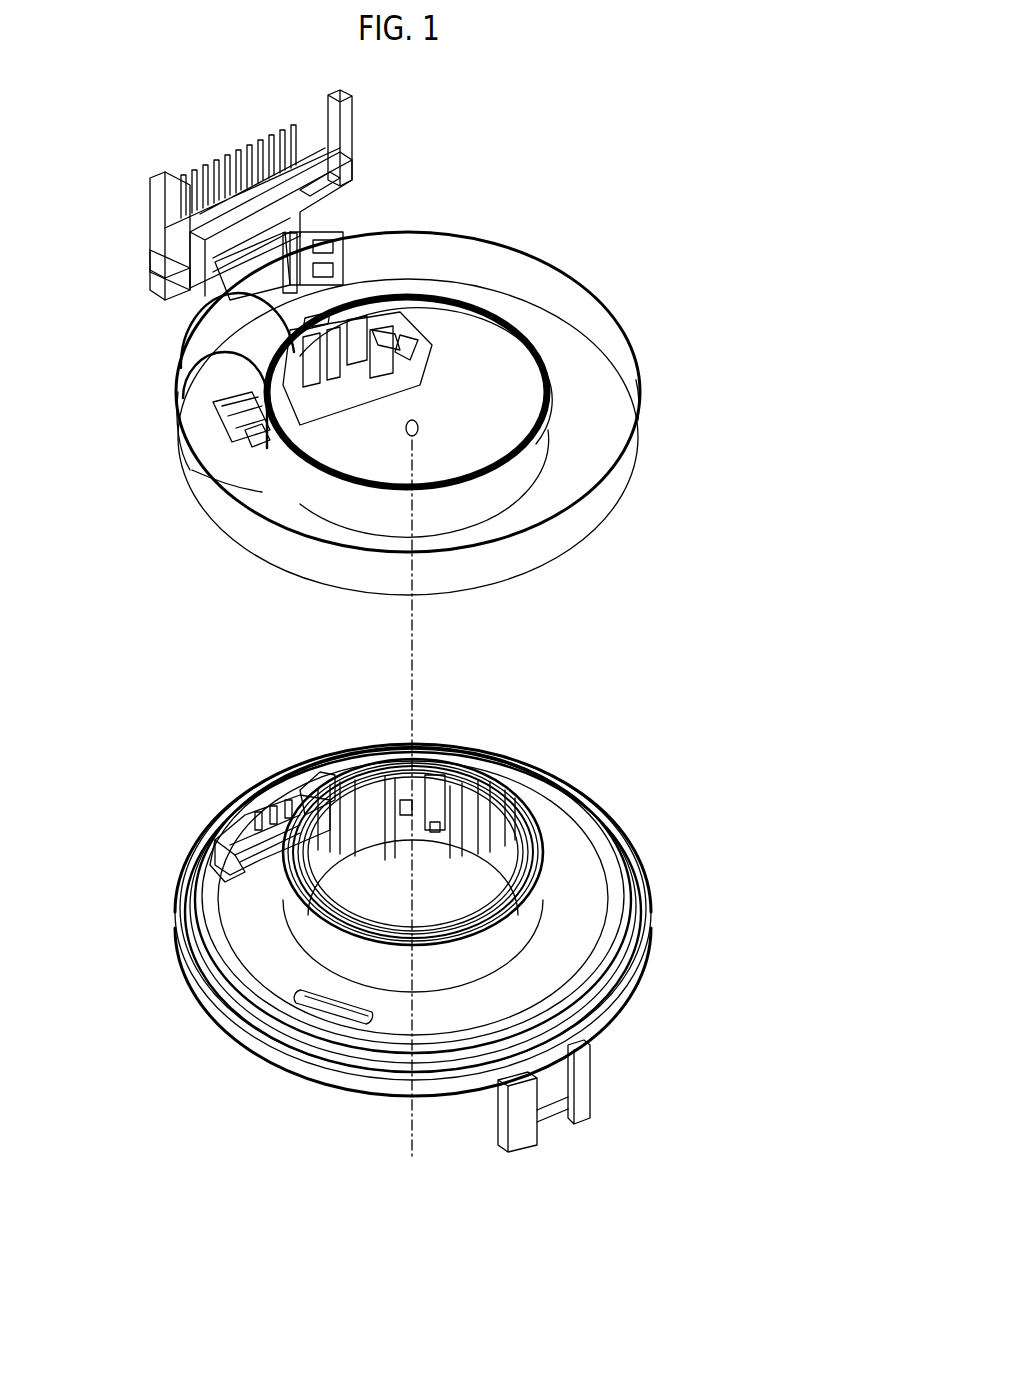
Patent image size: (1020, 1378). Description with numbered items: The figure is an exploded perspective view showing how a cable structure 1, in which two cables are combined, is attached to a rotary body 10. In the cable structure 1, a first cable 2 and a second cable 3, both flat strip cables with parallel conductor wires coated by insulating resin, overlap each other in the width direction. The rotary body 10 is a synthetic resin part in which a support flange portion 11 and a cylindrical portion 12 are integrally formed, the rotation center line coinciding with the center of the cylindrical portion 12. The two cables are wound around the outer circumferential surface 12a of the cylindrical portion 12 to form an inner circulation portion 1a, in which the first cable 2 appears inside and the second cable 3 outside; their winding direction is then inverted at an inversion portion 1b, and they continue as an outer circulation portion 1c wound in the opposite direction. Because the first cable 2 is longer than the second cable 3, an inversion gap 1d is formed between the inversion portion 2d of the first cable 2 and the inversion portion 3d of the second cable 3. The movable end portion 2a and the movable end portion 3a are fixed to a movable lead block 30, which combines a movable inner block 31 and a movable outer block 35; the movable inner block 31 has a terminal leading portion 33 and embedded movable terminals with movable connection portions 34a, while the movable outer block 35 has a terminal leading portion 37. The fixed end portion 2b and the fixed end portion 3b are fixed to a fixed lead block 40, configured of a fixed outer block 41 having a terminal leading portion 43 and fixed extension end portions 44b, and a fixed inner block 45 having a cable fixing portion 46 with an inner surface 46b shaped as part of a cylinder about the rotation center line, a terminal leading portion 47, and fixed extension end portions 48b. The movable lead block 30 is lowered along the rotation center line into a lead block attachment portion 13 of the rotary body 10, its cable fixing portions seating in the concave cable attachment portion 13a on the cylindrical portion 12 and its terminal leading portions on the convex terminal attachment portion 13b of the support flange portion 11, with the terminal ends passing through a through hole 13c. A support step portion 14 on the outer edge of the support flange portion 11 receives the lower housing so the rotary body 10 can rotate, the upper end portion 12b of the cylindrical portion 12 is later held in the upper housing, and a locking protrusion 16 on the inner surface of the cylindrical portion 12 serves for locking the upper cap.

The cable structure 1 is at (664, 390).
The inner circulation portion 1a is at (475, 500).
The inversion portion 1b is at (177, 364).
The outer circulation portion 1c is at (620, 308).
The inversion gap 1d is at (212, 342).
The first cable 2 is at (600, 500).
The movable end portion 2a is at (405, 340).
The fixed end portion 2b is at (300, 232).
The inversion portion 2d is at (228, 325).
The second cable 3 is at (540, 282).
The movable end portion 3a is at (392, 340).
The fixed end portion 3b is at (325, 320).
The inversion portion 3d is at (195, 393).
The rotary body 10 is at (655, 862).
The support flange portion 11 is at (258, 975).
The cylindrical portion 12 is at (439, 846).
The outer circumferential surface 12a is at (530, 905).
The upper end portion 12b is at (440, 905).
The lead block attachment portion 13 is at (249, 770).
The cable attachment portion 13a is at (322, 775).
The terminal attachment portion 13b is at (258, 812).
The through hole 13c is at (230, 845).
The support step portion 14 is at (258, 1040).
The locking protrusion 16 is at (437, 825).
The movable lead block 30 is at (360, 408).
The movable inner block 31 is at (385, 376).
The terminal leading portion 33 is at (262, 425).
The movable connection portion 34a is at (337, 390).
The movable outer block 35 is at (356, 322).
The terminal leading portion 37 is at (225, 432).
The fixed lead block 40 is at (252, 198).
The fixed outer block 41 is at (150, 240).
The terminal leading portion 43 is at (318, 140).
The fixed extension end portion 44b is at (182, 170).
The fixed inner block 45 is at (152, 268).
The cable fixing portion 46 is at (222, 290).
The inner surface 46b is at (337, 258).
The terminal leading portion 47 is at (345, 180).
The fixed extension end portion 48b is at (250, 160).